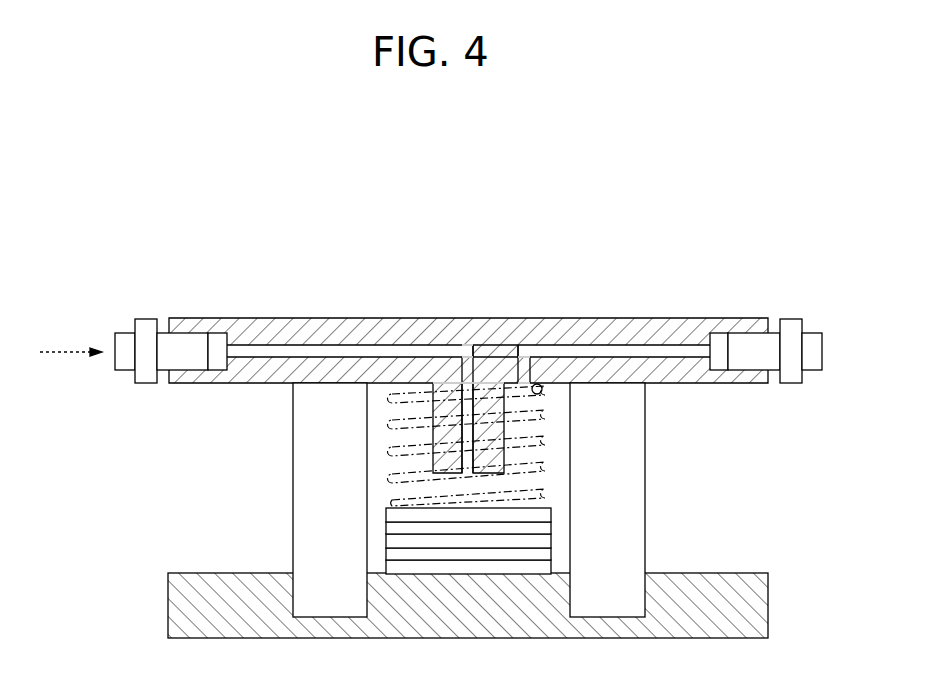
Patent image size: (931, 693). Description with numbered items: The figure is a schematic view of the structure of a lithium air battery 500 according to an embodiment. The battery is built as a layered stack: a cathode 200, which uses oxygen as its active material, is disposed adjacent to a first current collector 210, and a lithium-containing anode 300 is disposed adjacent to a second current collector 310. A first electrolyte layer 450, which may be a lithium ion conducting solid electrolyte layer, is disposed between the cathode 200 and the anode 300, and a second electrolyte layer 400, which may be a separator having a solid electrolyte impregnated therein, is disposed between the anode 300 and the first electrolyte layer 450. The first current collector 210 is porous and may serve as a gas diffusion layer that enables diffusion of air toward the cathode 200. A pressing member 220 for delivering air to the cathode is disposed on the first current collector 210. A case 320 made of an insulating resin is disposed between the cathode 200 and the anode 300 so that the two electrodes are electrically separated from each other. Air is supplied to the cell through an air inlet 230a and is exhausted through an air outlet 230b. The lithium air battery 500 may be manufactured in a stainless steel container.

The lithium air battery 500 is at (454, 408).
The air inlet 230a is at (126, 362).
The air outlet 230b is at (810, 362).
The pressing member 220 is at (548, 437).
The case 320 is at (305, 483).
The second current collector 310 is at (178, 607).
The first current collector 210 is at (551, 512).
The cathode 200 is at (551, 527).
The first electrolyte layer 450 is at (551, 540).
The second electrolyte layer 400 is at (551, 553).
The anode 300 is at (551, 567).